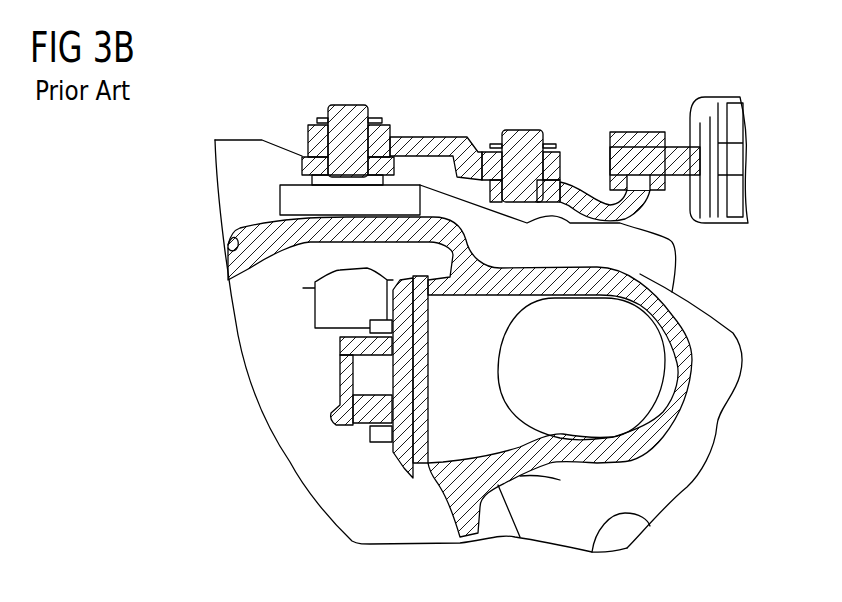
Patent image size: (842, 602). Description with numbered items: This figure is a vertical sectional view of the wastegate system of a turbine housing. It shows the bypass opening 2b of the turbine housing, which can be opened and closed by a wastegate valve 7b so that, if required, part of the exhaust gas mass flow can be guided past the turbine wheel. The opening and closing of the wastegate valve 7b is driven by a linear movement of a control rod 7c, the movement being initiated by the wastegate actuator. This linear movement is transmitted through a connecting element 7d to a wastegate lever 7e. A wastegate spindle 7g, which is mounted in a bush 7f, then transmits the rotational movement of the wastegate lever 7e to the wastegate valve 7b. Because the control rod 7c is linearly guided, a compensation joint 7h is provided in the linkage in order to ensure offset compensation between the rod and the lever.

The bypass opening 2b is at (447, 385).
The wastegate valve 7b is at (370, 387).
The control rod 7c is at (674, 160).
The connecting element 7d is at (438, 150).
The wastegate lever 7e is at (302, 166).
The bush 7f is at (343, 308).
The wastegate spindle 7g is at (340, 360).
The compensation joint 7h is at (523, 152).